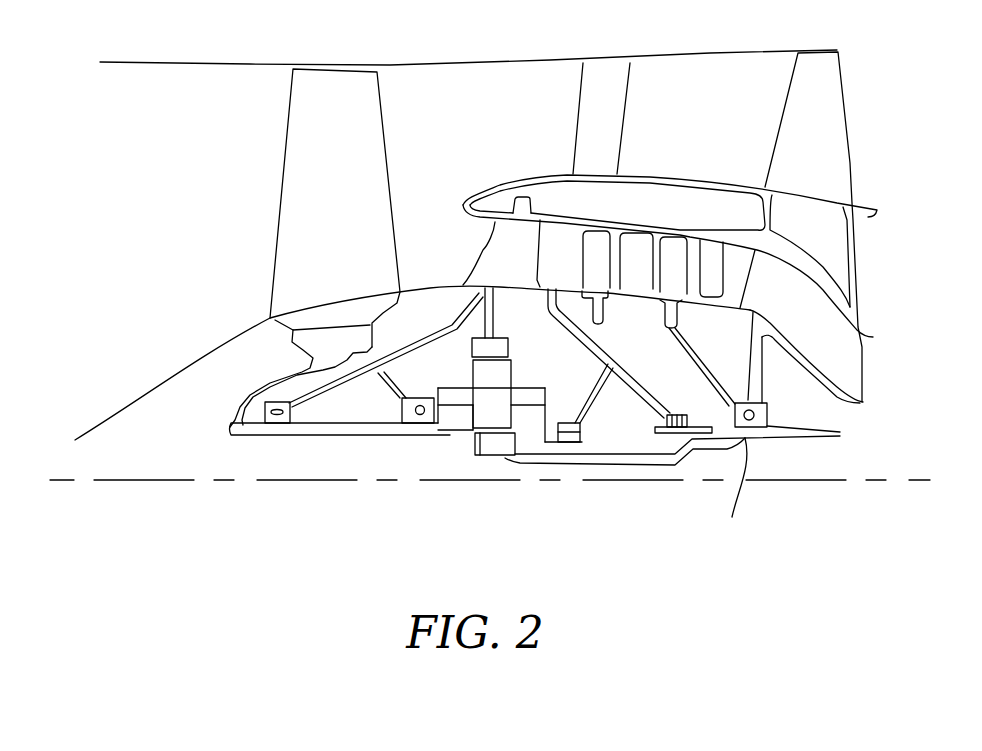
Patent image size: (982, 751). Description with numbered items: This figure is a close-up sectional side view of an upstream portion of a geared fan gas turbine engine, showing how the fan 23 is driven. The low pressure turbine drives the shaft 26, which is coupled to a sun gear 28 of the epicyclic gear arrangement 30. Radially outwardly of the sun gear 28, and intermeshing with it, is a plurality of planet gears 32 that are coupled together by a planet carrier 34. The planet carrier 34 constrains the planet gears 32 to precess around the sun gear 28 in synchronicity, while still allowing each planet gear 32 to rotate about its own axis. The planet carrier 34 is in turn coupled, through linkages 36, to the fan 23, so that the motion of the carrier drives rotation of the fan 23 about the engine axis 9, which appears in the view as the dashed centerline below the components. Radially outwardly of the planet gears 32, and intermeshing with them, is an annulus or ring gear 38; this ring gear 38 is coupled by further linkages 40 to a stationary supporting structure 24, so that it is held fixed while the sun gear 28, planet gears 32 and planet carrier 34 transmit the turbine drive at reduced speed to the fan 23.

The engine axis 9 is at (162, 485).
The fan 23 is at (310, 195).
The stationary supporting structure 24 is at (493, 247).
The shaft 26 is at (560, 460).
The sun gear 28 is at (493, 437).
The epicyclic gear arrangement 30 is at (460, 430).
The planet gears 32 is at (482, 420).
The planet carrier 34 is at (532, 418).
The linkages 36 is at (452, 423).
The ring gear 38 is at (498, 347).
The linkages 40 is at (497, 318).